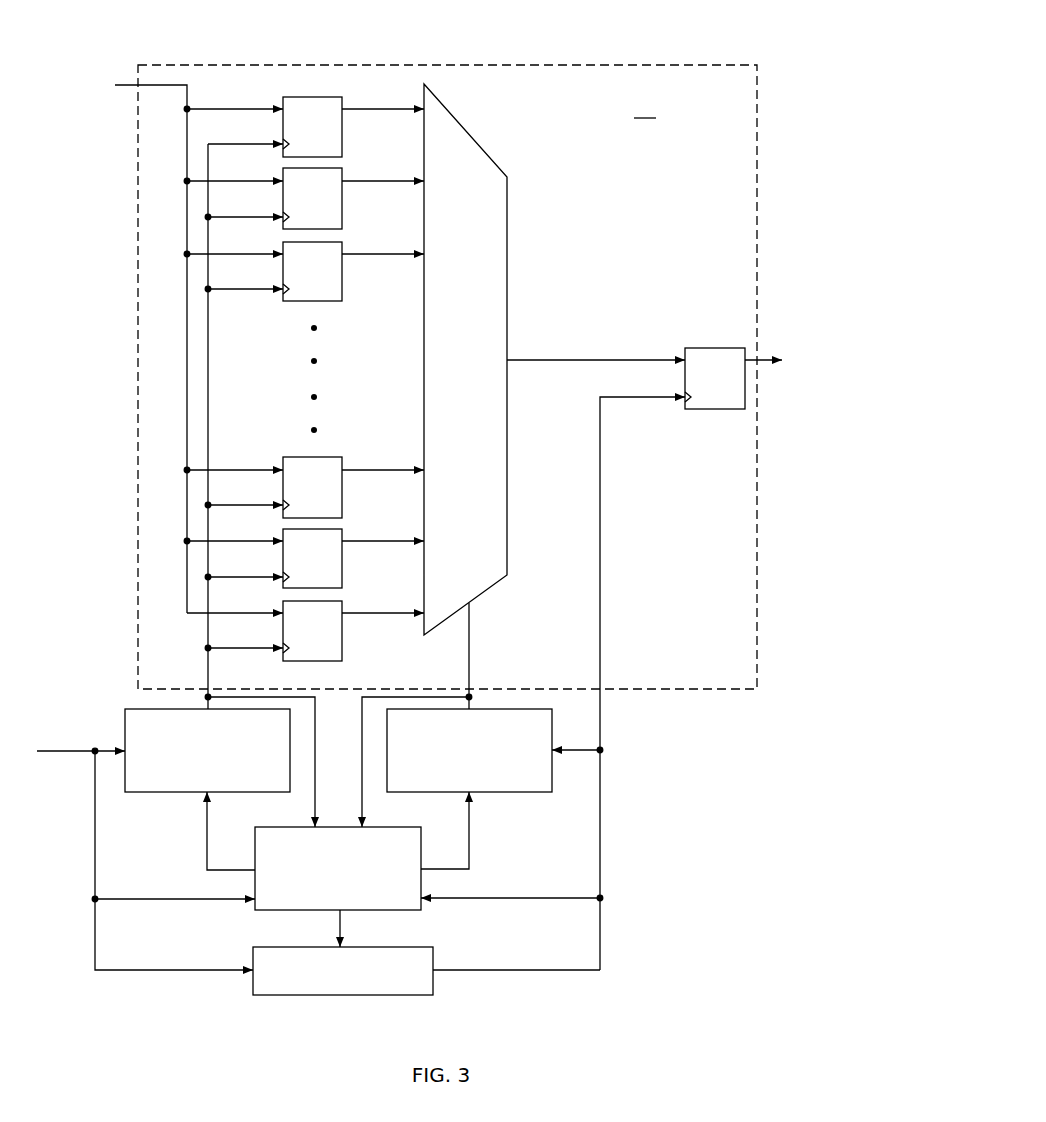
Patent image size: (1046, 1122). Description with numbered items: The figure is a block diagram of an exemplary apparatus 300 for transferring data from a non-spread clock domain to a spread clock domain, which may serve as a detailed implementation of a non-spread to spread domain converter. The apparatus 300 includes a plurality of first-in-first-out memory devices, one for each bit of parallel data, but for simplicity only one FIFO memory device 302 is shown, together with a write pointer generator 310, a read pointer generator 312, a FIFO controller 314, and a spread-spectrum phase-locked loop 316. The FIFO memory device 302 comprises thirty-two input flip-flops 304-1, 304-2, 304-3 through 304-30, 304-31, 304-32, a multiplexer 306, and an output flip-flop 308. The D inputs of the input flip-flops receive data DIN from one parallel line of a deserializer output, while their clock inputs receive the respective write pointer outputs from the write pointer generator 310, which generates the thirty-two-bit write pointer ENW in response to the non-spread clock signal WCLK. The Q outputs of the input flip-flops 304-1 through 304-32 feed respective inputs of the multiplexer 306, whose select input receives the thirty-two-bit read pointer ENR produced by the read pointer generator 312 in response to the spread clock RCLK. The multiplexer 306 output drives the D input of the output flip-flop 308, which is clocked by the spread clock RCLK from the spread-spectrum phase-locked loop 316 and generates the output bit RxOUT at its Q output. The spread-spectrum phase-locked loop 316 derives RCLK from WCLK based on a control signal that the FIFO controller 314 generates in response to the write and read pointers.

The apparatus 300 is at (655, 40).
The FIFO memory device 302 is at (447, 377).
The input flip-flop 304-1 is at (342, 121).
The input flip-flop 304-2 is at (342, 193).
The input flip-flop 304-3 is at (342, 266).
The input flip-flop 304-30 is at (342, 482).
The input flip-flop 304-31 is at (342, 553).
The input flip-flop 304-32 is at (342, 625).
The multiplexer 306 is at (507, 232).
The output flip-flop 308 is at (712, 348).
The write pointer generator 310 is at (184, 792).
The read pointer generator 312 is at (503, 792).
The FIFO controller 314 is at (290, 827).
The spread-spectrum phase-locked loop 316 is at (268, 995).